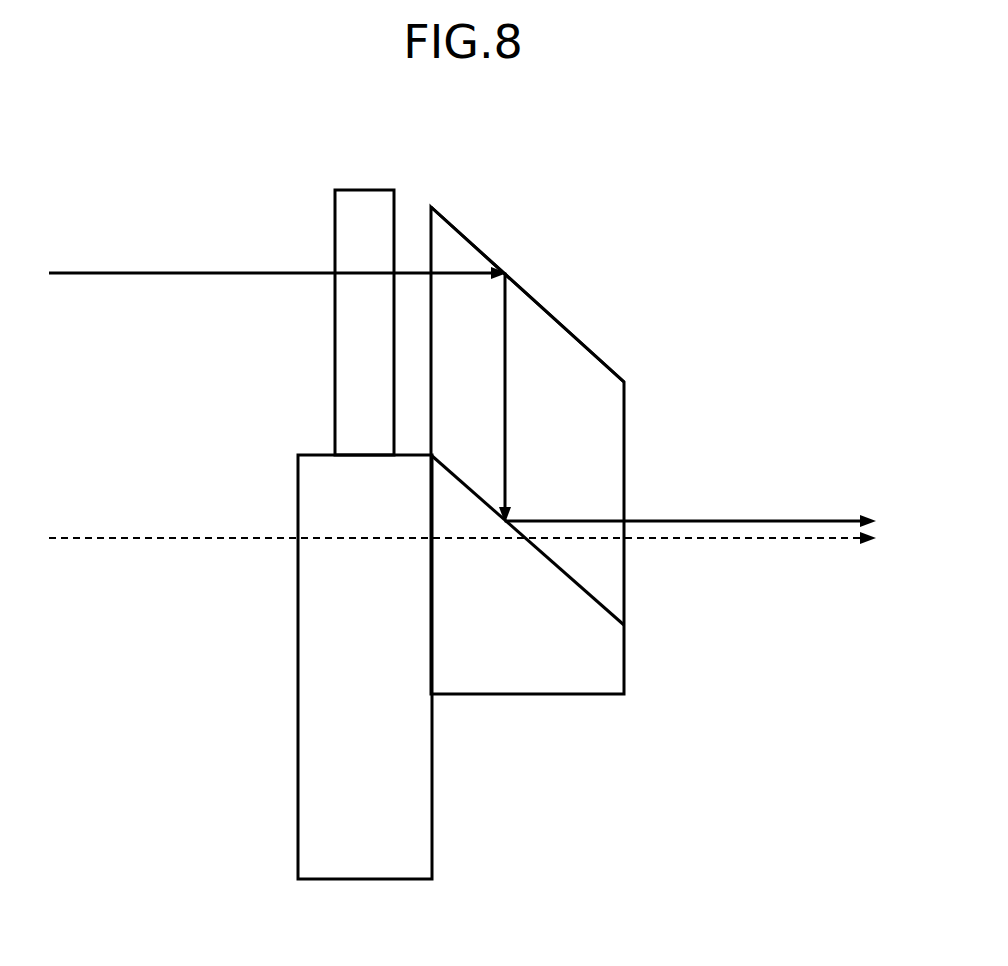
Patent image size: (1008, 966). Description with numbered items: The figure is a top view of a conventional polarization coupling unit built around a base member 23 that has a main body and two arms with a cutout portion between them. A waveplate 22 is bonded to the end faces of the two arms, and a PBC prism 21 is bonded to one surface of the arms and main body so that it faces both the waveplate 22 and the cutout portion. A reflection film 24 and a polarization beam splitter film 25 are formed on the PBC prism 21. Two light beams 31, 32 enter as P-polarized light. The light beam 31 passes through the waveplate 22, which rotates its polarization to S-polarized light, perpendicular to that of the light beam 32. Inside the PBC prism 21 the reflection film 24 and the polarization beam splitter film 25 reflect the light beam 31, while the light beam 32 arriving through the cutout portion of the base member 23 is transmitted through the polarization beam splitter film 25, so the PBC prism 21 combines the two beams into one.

The PBC prism 21 is at (620, 292).
The waveplate 22 is at (364, 189).
The base member 23 is at (363, 880).
The reflection film 24 is at (533, 296).
The polarization beam splitter film 25 is at (580, 598).
The light beam 31 is at (90, 272).
The light beam 32 is at (90, 536).